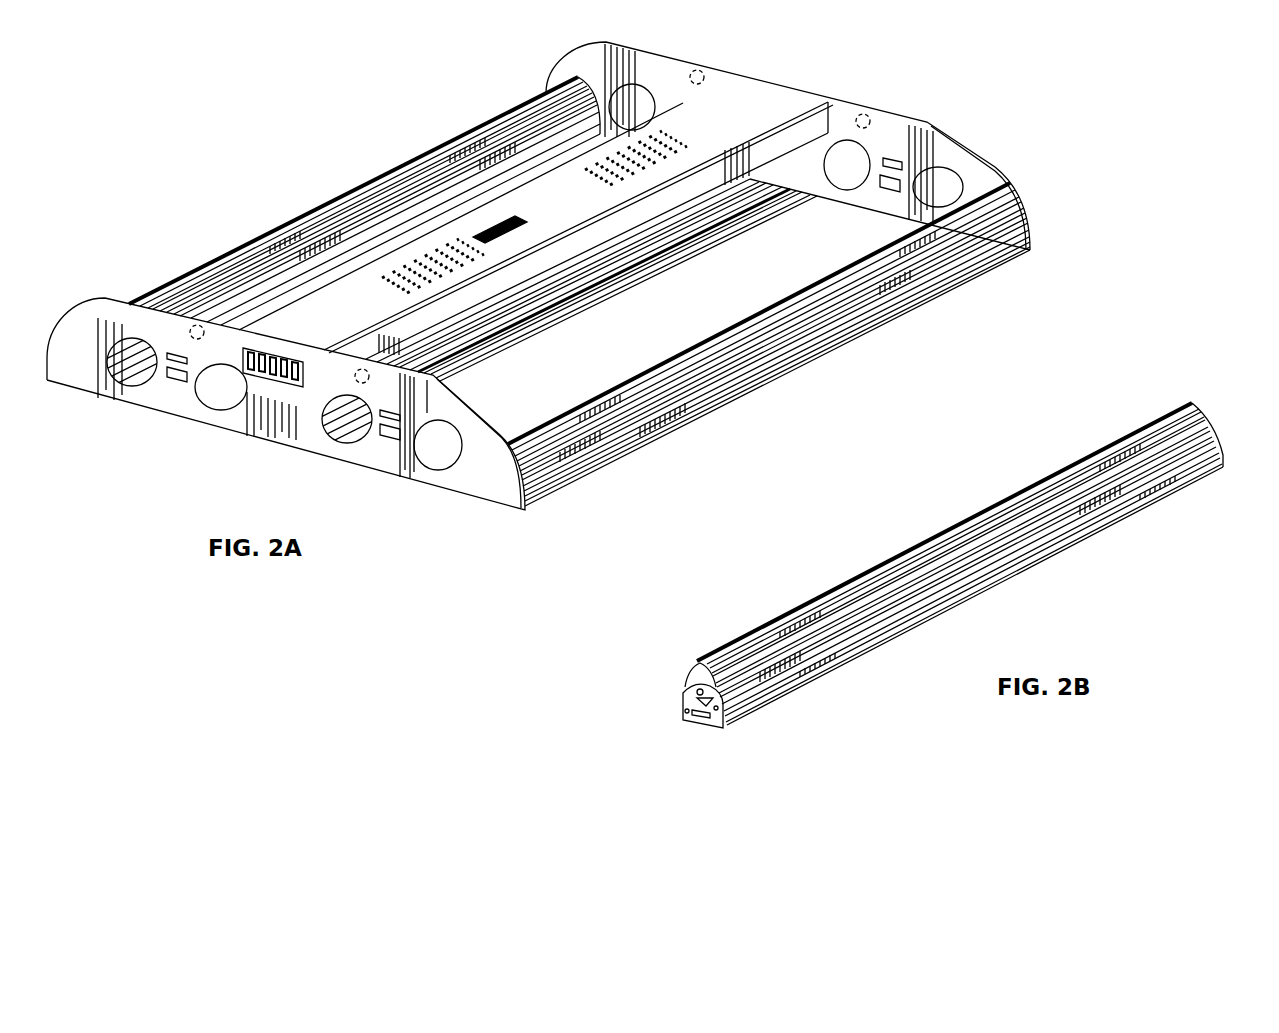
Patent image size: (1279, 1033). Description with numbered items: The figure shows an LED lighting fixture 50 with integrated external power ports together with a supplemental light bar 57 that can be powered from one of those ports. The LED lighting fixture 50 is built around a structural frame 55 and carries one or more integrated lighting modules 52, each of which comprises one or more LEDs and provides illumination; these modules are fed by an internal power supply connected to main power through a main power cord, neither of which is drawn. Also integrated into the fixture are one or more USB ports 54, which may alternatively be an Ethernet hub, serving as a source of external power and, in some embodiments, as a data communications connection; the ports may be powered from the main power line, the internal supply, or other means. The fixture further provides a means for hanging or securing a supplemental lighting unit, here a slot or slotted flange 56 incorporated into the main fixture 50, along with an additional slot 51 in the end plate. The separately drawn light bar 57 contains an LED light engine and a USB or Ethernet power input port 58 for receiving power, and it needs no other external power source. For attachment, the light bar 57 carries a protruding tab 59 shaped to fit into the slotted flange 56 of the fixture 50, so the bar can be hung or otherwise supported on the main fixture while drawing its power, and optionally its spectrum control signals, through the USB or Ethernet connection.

In FIG. 2A, the LED lighting fixture 50 is at (703, 44).
In FIG. 2A, the end plate slot 51 is at (388, 441).
In FIG. 2A, the integrated lighting module 52 is at (317, 208).
In FIG. 2A, the integrated USB port 54 is at (268, 388).
In FIG. 2A, the structural frame 55 is at (803, 100).
In FIG. 2A, the slotted flange 56 is at (893, 158).
In FIG. 2B, the light bar 57 is at (922, 546).
In FIG. 2B, the power input port 58 is at (694, 717).
In FIG. 2B, the protruding tab 59 is at (683, 692).